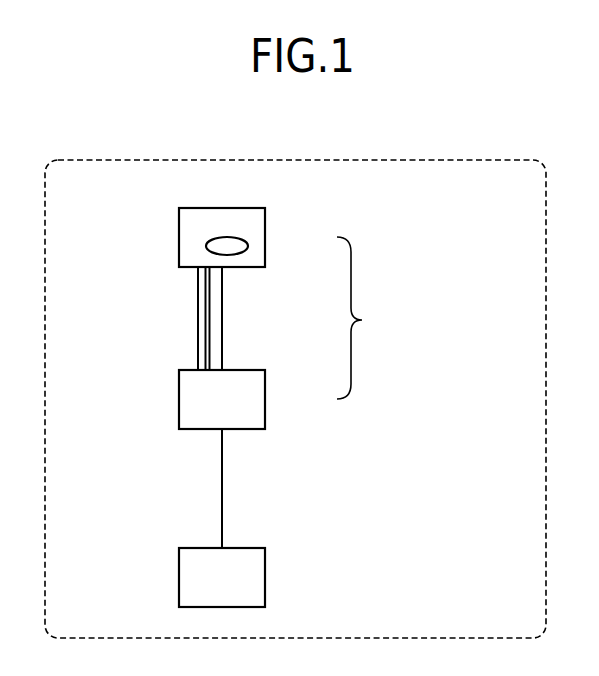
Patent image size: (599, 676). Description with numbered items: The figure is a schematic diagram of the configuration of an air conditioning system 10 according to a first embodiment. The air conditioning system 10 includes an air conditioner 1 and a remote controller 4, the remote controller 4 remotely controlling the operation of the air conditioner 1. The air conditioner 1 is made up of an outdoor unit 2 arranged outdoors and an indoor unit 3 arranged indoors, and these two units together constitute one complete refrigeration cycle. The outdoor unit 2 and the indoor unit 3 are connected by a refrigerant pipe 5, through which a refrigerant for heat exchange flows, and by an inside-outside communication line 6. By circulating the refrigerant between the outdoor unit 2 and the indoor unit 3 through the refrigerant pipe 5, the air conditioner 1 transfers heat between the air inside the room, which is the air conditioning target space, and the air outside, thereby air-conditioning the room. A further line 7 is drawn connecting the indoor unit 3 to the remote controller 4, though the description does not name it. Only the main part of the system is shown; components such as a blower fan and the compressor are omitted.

The air conditioning system 10 is at (520, 158).
The air conditioner 1 is at (384, 332).
The outdoor unit 2 is at (255, 253).
The indoor unit 3 is at (255, 388).
The remote controller 4 is at (247, 548).
The refrigerant pipe 5 is at (201, 327).
The inside-outside communication line 6 is at (224, 316).
The connection cable 7 is at (223, 470).